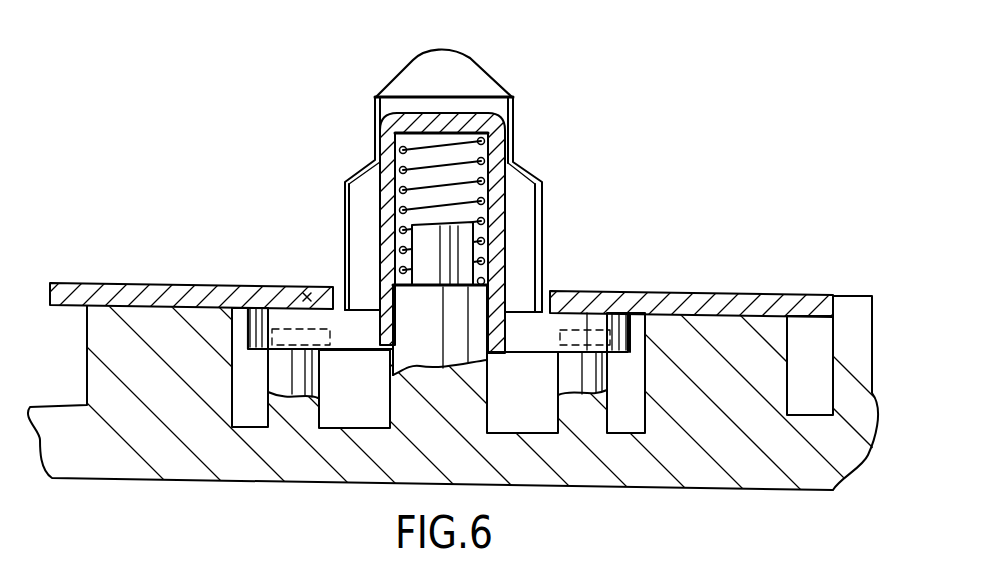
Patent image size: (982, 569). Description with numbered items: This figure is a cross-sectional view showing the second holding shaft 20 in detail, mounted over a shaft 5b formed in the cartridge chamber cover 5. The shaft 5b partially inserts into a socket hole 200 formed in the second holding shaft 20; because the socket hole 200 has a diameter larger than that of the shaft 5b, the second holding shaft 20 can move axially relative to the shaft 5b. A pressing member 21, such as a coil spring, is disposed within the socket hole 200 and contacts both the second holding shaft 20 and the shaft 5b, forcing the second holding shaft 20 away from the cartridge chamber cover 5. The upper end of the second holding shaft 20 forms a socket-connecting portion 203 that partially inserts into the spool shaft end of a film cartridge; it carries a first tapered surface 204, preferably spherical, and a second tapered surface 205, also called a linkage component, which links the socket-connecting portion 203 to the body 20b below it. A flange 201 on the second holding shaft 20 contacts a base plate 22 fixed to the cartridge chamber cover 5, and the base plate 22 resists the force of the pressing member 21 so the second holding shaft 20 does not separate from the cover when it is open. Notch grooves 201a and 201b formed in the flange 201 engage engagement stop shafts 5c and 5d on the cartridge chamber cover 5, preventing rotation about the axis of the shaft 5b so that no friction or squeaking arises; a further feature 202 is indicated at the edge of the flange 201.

The cartridge chamber cover 5 is at (488, 413).
The shaft 5b is at (433, 360).
The engagement stop shaft 5c is at (588, 360).
The engagement stop shaft 5d is at (285, 366).
The second holding shaft 20 is at (449, 200).
The switch housing body 20b is at (543, 205).
The pressing member 21 is at (396, 150).
The base plate 22 is at (777, 293).
The socket hole 200 is at (408, 345).
The flange 201 is at (356, 352).
The notch groove 201a is at (298, 296).
The notch groove 201b is at (578, 305).
The flange edge 202 is at (628, 300).
The socket-connecting portion 203 is at (512, 132).
The first tapered surface 204 is at (478, 72).
The second tapered surface 205 is at (535, 178).